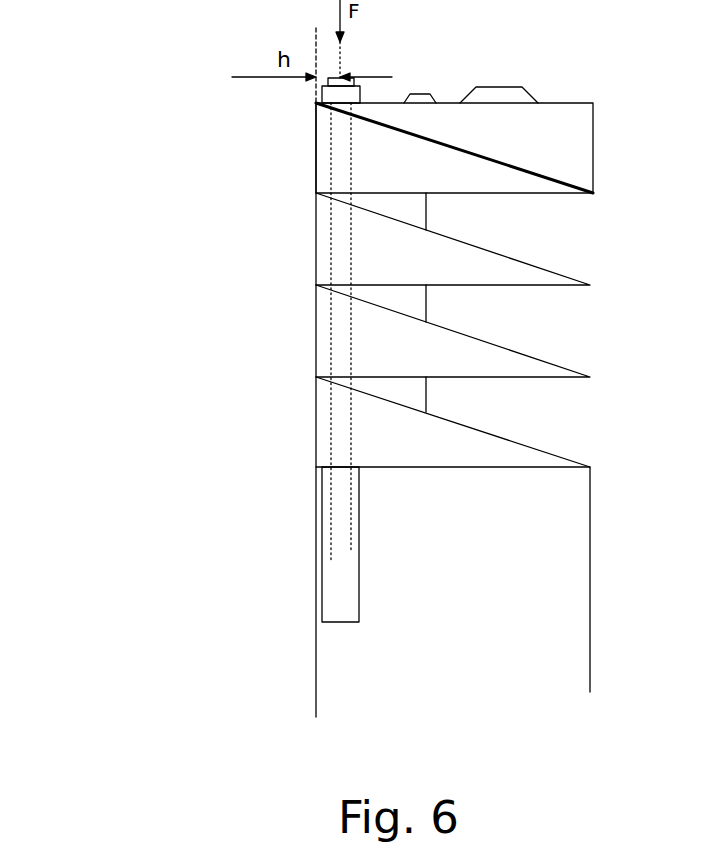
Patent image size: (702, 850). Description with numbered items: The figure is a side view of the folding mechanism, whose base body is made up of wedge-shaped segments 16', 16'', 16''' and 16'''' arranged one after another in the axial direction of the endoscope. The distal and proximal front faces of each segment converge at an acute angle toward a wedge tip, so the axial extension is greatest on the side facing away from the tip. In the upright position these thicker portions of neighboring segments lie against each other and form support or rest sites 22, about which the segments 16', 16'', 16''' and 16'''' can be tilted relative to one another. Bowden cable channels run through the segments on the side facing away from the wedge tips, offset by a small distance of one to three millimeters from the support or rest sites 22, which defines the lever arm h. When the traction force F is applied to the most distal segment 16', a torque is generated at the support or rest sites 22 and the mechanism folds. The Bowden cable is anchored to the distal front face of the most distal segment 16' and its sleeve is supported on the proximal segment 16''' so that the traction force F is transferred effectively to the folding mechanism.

The most distal segment 16' is at (317, 140).
The segment 16'' is at (315, 239).
The proximal segment 16''' is at (309, 331).
The segment 16'''' is at (305, 422).
The support or rest sites 22 is at (318, 195).